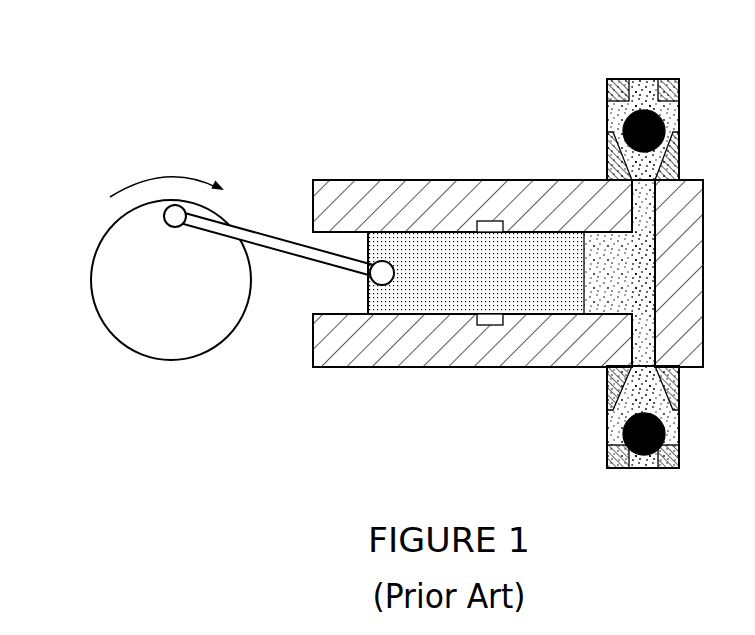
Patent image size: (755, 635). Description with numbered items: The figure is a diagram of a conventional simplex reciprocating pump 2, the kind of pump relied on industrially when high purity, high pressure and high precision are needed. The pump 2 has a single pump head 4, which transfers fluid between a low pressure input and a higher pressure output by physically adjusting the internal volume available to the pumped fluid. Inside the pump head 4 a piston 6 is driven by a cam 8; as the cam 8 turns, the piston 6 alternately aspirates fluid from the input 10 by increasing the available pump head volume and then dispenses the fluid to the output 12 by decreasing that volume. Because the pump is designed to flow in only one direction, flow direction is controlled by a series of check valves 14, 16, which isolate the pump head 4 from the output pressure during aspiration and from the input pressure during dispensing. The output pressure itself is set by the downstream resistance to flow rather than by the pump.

The pump 2 is at (113, 79).
The pump head 4 is at (464, 367).
The piston 6 is at (421, 249).
The cam 8 is at (171, 360).
The input 10 is at (665, 469).
The output 12 is at (676, 80).
The check valve 14 is at (645, 469).
The check valve 16 is at (641, 80).